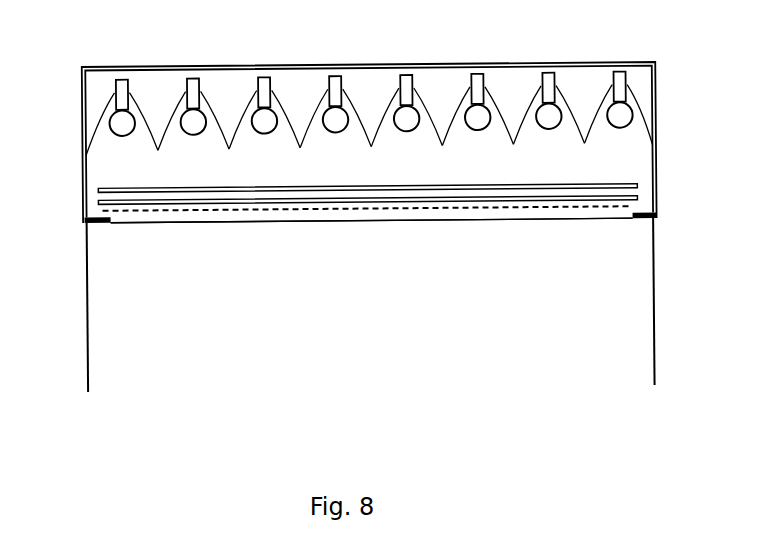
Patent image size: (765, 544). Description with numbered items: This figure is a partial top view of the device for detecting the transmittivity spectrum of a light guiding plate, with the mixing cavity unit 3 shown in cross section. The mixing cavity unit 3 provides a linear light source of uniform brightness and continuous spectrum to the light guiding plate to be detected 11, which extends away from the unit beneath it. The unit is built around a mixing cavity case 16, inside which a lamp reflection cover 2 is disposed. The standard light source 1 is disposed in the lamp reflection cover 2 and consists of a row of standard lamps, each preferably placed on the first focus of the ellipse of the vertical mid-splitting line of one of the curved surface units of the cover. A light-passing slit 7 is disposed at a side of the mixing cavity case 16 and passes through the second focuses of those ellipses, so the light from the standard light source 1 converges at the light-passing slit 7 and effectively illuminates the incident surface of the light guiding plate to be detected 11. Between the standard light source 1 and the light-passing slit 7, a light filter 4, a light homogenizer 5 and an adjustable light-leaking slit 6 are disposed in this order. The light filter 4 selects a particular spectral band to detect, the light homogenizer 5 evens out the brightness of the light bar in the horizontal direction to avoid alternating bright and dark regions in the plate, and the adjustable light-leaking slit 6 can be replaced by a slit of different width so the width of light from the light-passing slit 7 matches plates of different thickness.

The standard light source 1 is at (122, 134).
The lamp reflection cover 2 is at (211, 106).
The mixing cavity unit 3 is at (345, 152).
The light filter 4 is at (98, 187).
The light homogenizer 5 is at (96, 200).
The adjustable light-leaking slit 6 is at (99, 212).
The light-passing slit 7 is at (129, 218).
The light guiding plate to be detected 11 is at (136, 306).
The mixing cavity case 16 is at (302, 64).